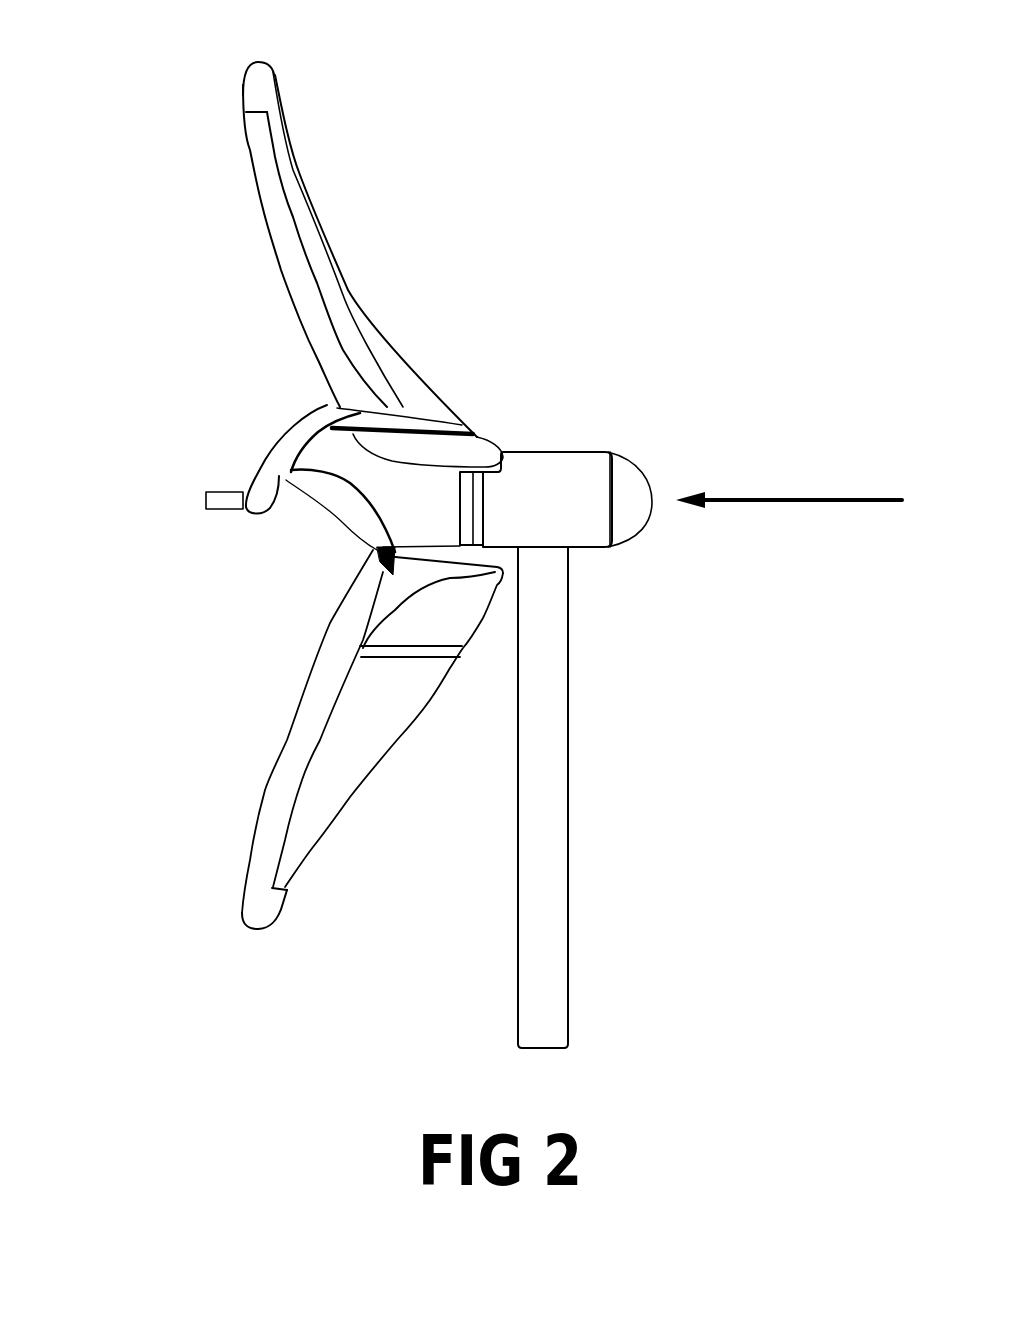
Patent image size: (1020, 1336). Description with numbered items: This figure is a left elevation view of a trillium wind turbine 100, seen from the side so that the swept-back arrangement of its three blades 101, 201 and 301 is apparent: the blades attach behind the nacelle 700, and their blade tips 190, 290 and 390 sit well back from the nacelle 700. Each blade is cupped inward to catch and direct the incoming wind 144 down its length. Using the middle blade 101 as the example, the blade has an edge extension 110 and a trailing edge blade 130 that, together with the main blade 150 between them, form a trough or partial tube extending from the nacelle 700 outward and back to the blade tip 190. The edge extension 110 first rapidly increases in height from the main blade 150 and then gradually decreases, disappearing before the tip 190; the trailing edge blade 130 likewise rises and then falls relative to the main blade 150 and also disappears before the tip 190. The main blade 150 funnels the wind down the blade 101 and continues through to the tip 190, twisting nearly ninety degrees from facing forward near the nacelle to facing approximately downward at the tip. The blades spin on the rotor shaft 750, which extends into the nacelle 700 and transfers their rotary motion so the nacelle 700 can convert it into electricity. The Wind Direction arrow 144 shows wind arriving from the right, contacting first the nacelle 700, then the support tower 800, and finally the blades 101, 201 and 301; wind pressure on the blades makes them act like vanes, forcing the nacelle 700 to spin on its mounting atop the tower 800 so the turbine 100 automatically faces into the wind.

The trillium wind turbine 100 is at (255, 1072).
The blade 101 is at (314, 484).
The edge extension 110 is at (450, 446).
The trailing edge blade 130 is at (372, 522).
The incoming wind 144 is at (758, 497).
The main blade 150 is at (375, 468).
The blade tip 190 is at (252, 507).
The blade 201 is at (276, 228).
The blade tip 290 is at (258, 63).
The blade 301 is at (295, 771).
The blade tip 390 is at (250, 928).
The nacelle 700 is at (590, 482).
The rotor shaft 750 is at (206, 498).
The tower 800 is at (520, 1017).